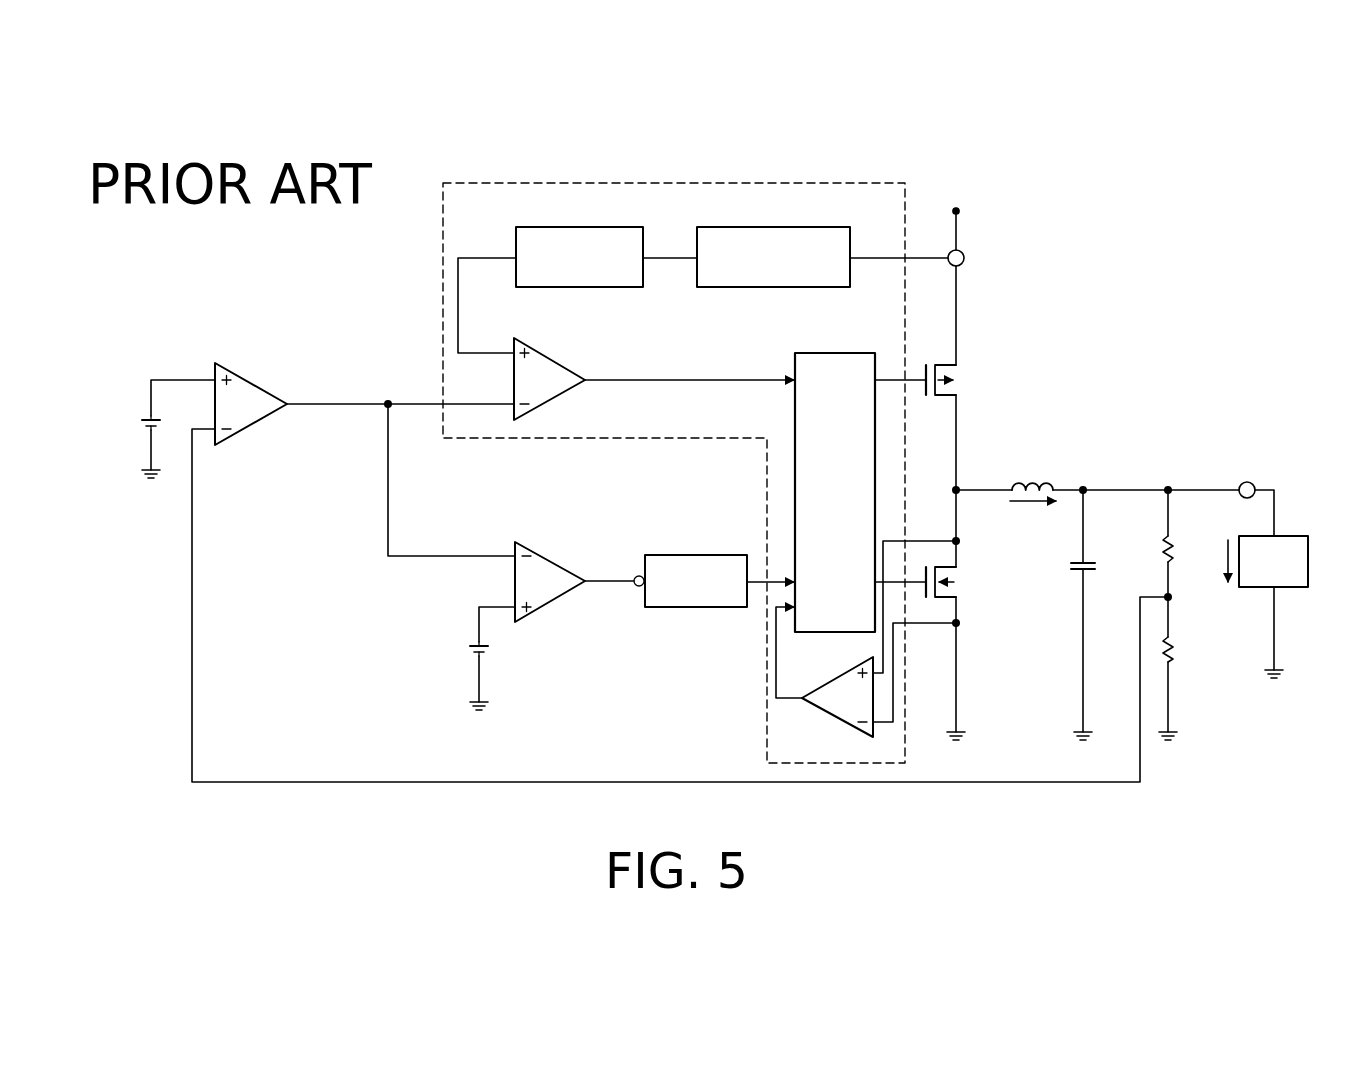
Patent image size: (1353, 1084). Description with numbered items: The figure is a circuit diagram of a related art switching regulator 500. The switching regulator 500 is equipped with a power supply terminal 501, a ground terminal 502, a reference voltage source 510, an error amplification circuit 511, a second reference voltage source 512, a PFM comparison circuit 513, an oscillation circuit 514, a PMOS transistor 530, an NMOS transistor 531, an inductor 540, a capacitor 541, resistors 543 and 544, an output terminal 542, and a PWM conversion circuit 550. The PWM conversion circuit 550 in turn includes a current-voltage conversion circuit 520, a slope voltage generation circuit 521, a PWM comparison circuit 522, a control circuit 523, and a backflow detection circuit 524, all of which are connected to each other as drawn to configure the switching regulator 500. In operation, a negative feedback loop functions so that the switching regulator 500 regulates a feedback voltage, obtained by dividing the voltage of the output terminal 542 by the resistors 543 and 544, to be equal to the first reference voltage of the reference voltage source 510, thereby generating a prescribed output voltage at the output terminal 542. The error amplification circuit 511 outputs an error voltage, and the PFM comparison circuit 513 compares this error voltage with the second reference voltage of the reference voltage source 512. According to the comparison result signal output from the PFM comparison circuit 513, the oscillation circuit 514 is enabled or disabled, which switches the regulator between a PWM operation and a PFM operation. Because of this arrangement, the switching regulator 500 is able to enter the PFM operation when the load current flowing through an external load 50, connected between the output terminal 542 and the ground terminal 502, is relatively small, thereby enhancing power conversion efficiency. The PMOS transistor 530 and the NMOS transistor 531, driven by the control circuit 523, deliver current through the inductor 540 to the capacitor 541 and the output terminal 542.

The switching regulator 500 is at (1143, 181).
The power supply terminal 501 is at (960, 211).
The ground terminal 502 is at (960, 734).
The reference voltage source 510 is at (160, 419).
The error amplification circuit 511 is at (248, 383).
The reference voltage source 512 is at (489, 646).
The PFM comparison circuit 513 is at (552, 562).
The oscillation circuit 514 is at (690, 555).
The current-voltage conversion circuit 520 is at (748, 227).
The slope voltage generation circuit 521 is at (590, 227).
The PWM comparison circuit 522 is at (562, 364).
The control circuit 523 is at (838, 353).
The backflow detection circuit 524 is at (838, 725).
The PMOS transistor 530 is at (955, 392).
The NMOS transistor 531 is at (955, 600).
The inductor 540 is at (1045, 481).
The capacitor 541 is at (1088, 563).
The output terminal 542 is at (1250, 482).
The resistor 543 is at (1174, 544).
The resistor 544 is at (1174, 648).
The PWM conversion circuit 550 is at (851, 182).
The external load 50 is at (1268, 590).